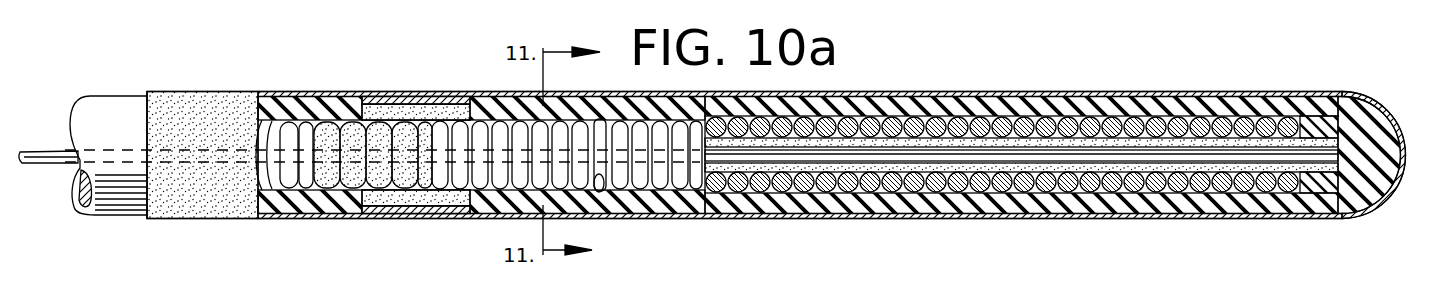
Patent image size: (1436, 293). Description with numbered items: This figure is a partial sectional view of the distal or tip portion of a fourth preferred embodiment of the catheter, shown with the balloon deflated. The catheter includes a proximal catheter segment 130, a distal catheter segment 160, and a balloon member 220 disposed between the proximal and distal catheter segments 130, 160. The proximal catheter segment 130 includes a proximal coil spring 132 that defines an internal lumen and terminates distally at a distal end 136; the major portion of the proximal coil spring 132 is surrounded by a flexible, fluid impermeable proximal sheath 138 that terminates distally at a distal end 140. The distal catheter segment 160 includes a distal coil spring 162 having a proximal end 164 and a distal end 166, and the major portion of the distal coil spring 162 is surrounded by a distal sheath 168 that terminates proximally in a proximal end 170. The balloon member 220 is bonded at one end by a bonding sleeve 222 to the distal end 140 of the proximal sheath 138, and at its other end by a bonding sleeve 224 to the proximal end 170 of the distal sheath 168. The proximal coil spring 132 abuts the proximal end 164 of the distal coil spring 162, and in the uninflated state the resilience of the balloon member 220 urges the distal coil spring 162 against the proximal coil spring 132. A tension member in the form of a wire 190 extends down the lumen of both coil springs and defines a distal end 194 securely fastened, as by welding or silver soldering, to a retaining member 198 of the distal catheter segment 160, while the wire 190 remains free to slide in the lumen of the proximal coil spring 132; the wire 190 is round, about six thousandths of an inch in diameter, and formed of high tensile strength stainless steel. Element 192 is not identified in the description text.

The proximal catheter segment 130 is at (156, 82).
The proximal coil spring 132 is at (292, 127).
The distal end 136 is at (613, 133).
The proximal sheath 138 is at (100, 106).
The distal end 140 is at (353, 218).
The distal catheter segment 160 is at (1084, 82).
The distal coil spring 162 is at (737, 218).
The proximal end 164 is at (600, 195).
The distal end 166 is at (1300, 112).
The distal sheath 168 is at (1047, 213).
The proximal end 170 is at (917, 108).
The wire 190 is at (897, 158).
The lead wire 192 is at (48, 222).
The distal end 194 is at (1369, 104).
The retaining member 198 is at (1303, 180).
The balloon member 220 is at (497, 105).
The bonding sleeve 222 is at (440, 215).
The bonding sleeve 224 is at (825, 200).